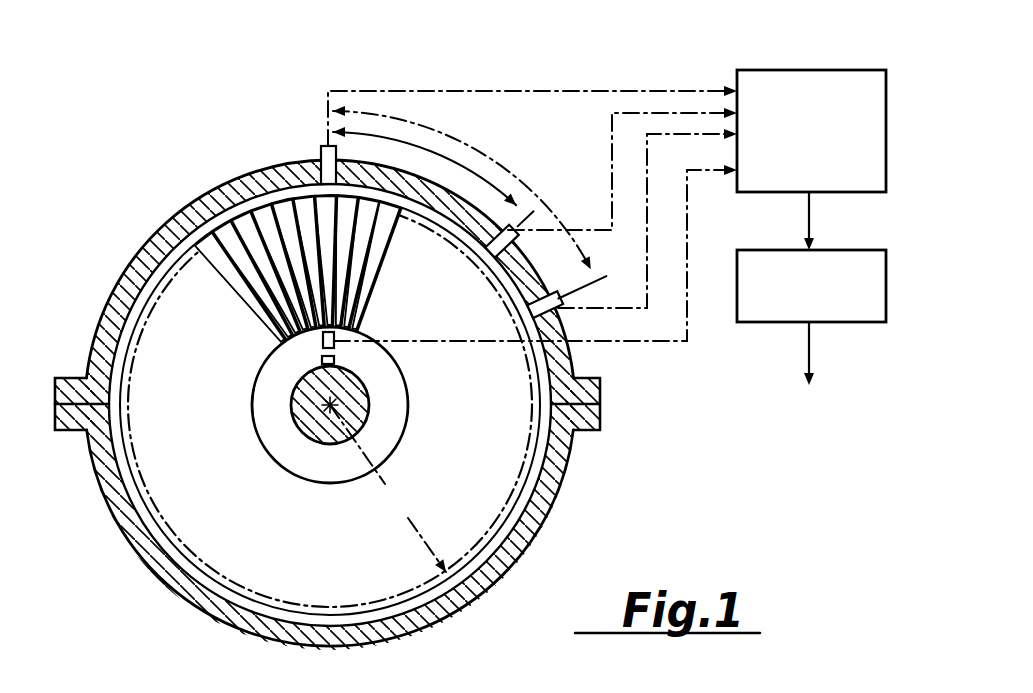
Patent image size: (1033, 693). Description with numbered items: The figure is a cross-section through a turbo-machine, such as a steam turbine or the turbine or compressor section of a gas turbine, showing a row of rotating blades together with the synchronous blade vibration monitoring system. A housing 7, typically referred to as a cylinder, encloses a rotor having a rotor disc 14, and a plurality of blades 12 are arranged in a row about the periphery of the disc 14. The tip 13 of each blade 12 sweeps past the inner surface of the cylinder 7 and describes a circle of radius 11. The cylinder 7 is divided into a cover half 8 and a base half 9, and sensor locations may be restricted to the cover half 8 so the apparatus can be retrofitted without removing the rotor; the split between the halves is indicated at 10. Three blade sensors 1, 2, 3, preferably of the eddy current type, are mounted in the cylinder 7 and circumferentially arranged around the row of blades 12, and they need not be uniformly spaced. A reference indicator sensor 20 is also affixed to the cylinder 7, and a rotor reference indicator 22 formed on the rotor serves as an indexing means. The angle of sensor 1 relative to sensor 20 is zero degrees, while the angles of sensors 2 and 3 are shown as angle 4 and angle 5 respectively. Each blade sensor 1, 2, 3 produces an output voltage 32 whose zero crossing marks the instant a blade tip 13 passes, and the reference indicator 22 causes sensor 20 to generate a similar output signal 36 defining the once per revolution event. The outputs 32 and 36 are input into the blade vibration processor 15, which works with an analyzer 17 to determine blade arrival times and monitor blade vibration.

The blade sensor 1 is at (320, 152).
The blade sensor 2 is at (512, 243).
The blade sensor 3 is at (559, 309).
The angle of sensor 2 4 is at (424, 166).
The angle of sensor 3 5 is at (514, 180).
The housing 7 is at (168, 213).
The cover half 8 is at (100, 314).
The base half 9 is at (97, 476).
The casing split line 10 is at (56, 378).
The radius 11 is at (388, 488).
The blades 12 is at (238, 283).
The blade tip 13 is at (403, 214).
The rotor disc 14 is at (297, 474).
The blade vibration processor 15 is at (798, 78).
The analyzer 17 is at (773, 323).
The reference indicator sensor 20 is at (322, 340).
The rotor reference indicator 22 is at (336, 360).
The sensor output voltage 32 is at (523, 90).
The reference sensor output signal 36 is at (688, 246).